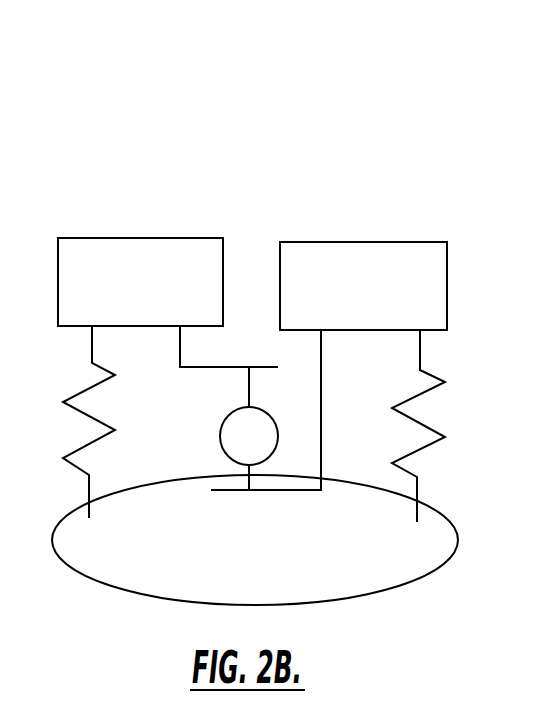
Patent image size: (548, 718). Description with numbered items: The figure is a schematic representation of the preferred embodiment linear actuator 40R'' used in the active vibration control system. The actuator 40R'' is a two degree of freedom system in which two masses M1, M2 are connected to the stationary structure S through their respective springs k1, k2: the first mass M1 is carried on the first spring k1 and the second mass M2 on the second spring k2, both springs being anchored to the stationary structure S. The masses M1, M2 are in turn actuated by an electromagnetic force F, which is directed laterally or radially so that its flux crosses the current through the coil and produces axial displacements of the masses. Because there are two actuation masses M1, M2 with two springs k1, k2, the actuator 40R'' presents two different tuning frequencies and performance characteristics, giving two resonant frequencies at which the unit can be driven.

The linear actuator 40R'' is at (252, 175).
The first mass M1 is at (140, 282).
The second mass M2 is at (363, 286).
The first spring k1 is at (108, 422).
The second spring k2 is at (441, 426).
The electromagnetic force F is at (251, 408).
The stationary structure S is at (255, 540).